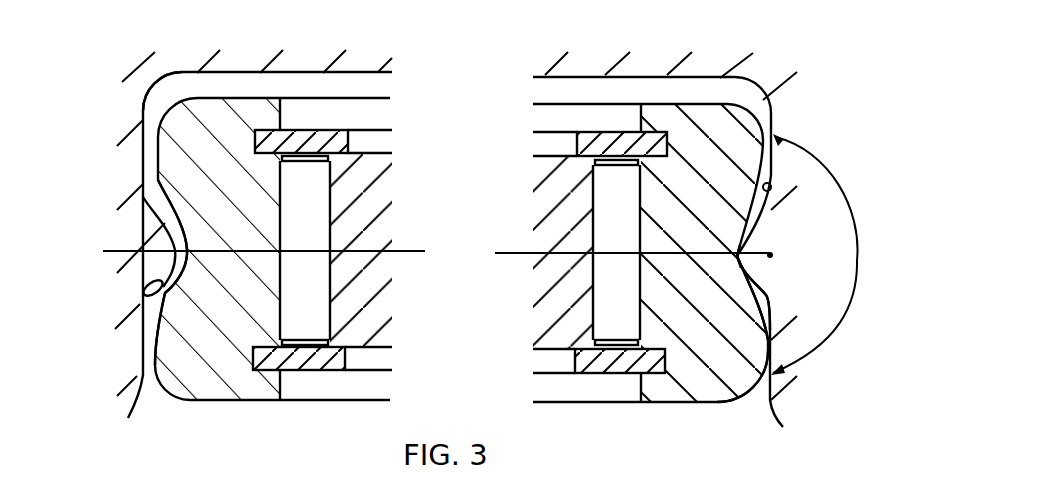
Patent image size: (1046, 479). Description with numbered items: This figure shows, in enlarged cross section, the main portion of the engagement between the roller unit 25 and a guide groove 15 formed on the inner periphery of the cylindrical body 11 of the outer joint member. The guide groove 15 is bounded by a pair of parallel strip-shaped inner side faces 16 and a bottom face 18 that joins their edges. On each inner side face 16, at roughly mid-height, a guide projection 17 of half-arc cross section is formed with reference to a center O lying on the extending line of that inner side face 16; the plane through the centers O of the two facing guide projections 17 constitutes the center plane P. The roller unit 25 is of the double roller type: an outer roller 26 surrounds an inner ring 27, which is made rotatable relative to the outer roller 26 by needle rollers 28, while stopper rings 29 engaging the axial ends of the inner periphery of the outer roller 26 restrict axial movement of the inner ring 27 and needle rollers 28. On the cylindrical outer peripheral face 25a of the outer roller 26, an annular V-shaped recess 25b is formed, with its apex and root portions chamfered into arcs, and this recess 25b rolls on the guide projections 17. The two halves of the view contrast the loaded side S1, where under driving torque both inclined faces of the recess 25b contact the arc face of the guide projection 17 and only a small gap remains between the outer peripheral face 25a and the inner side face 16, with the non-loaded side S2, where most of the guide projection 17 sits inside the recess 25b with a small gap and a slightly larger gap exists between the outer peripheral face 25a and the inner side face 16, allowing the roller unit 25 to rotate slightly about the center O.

The cylindrical body 11 is at (792, 108).
The guide groove 15 is at (375, 78).
The inner side face 16 is at (143, 378).
The guide projection 17 is at (143, 293).
The bottom face 18 is at (555, 77).
The roller unit 25 is at (228, 90).
The outer peripheral face 25a is at (158, 365).
The recess 25b is at (165, 194).
The outer roller 26 is at (143, 117).
The inner ring 27 is at (383, 202).
The needle roller 28 is at (312, 310).
The stopper ring 29 is at (305, 137).
The center plane P is at (408, 251).
The center O is at (770, 255).
The loaded side S1 is at (815, 190).
The non-loaded side S2 is at (112, 317).